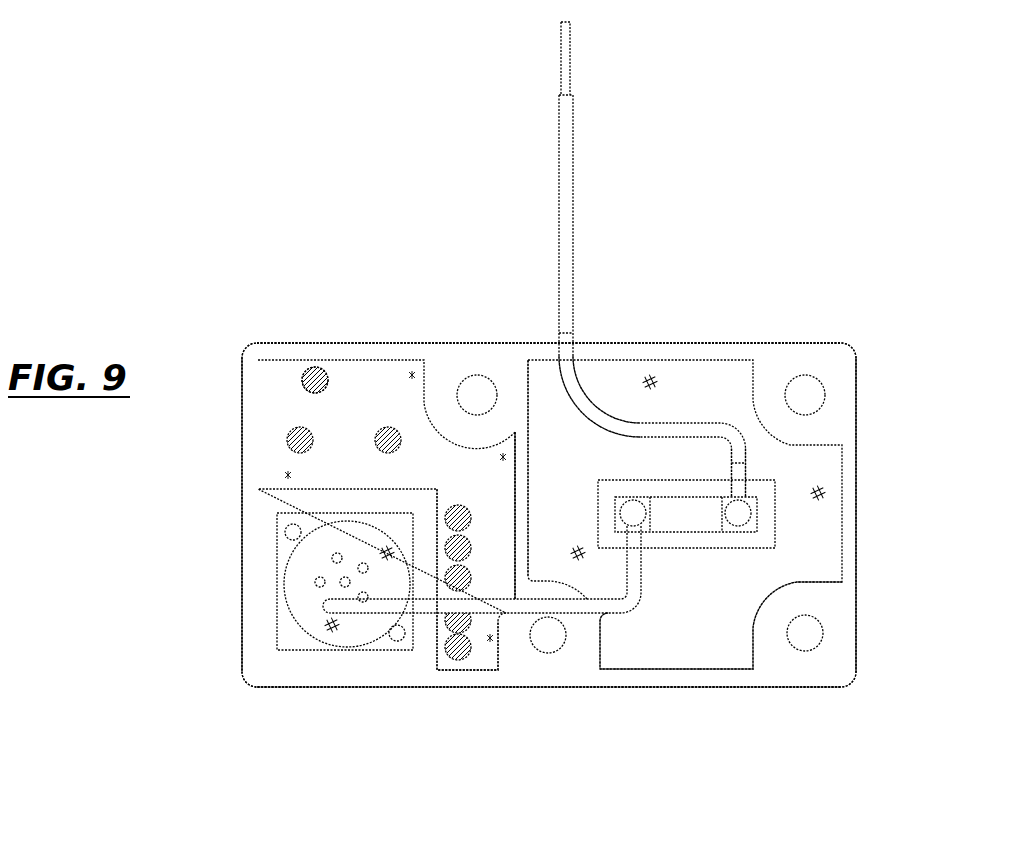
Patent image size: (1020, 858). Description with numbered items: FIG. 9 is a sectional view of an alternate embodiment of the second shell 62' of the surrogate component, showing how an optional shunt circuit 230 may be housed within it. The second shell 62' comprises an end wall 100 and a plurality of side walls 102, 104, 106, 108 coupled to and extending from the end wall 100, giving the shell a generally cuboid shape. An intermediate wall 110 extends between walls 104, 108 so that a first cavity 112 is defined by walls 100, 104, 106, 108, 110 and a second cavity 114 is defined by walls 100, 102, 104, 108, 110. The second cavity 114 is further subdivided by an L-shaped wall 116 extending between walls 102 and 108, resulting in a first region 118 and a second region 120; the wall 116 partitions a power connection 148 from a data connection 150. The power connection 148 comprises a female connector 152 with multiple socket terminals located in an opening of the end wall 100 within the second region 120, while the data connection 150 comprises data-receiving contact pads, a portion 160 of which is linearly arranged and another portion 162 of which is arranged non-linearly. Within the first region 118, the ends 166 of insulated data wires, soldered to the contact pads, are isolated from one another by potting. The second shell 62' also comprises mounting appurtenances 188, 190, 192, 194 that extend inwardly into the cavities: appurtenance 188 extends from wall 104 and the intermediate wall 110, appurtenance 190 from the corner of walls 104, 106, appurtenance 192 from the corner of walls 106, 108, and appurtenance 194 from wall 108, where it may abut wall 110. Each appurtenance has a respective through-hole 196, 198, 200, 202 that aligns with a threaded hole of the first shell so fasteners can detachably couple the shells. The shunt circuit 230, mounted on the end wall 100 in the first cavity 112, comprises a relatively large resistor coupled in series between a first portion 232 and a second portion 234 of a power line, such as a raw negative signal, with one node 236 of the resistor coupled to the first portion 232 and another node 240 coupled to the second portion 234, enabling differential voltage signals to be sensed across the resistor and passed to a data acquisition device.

The second shell 62' is at (578, 468).
The end wall 100 is at (677, 377).
The side wall 102 is at (248, 485).
The side wall 104 is at (530, 344).
The side wall 106 is at (856, 522).
The side wall 108 is at (583, 678).
The intermediate wall 110 is at (518, 517).
The first cavity 112 is at (617, 375).
The second cavity 114 is at (383, 372).
The wall 116 is at (437, 489).
The first region 118 is at (302, 412).
The second region 120 is at (317, 606).
The power connection 148 is at (278, 444).
The data connection 150 is at (282, 618).
The female connector 152 is at (292, 548).
The portion of contact pads 160 is at (456, 676).
The portion of contact pads 162 is at (278, 366).
The ends of insulated data wires 166 is at (312, 431).
The mounting appurtenance 188 is at (533, 412).
The mounting appurtenance 190 is at (773, 381).
The mounting appurtenance 192 is at (764, 636).
The mounting appurtenance 194 is at (580, 635).
The through-hole 196 is at (484, 386).
The through-hole 198 is at (814, 385).
The through-hole 200 is at (797, 626).
The through-hole 202 is at (534, 636).
The shunt circuit 230 is at (711, 560).
The first portion of power line 232 is at (641, 596).
The second portion of power line 234 is at (731, 457).
The node 236 is at (633, 512).
The node 240 is at (740, 513).